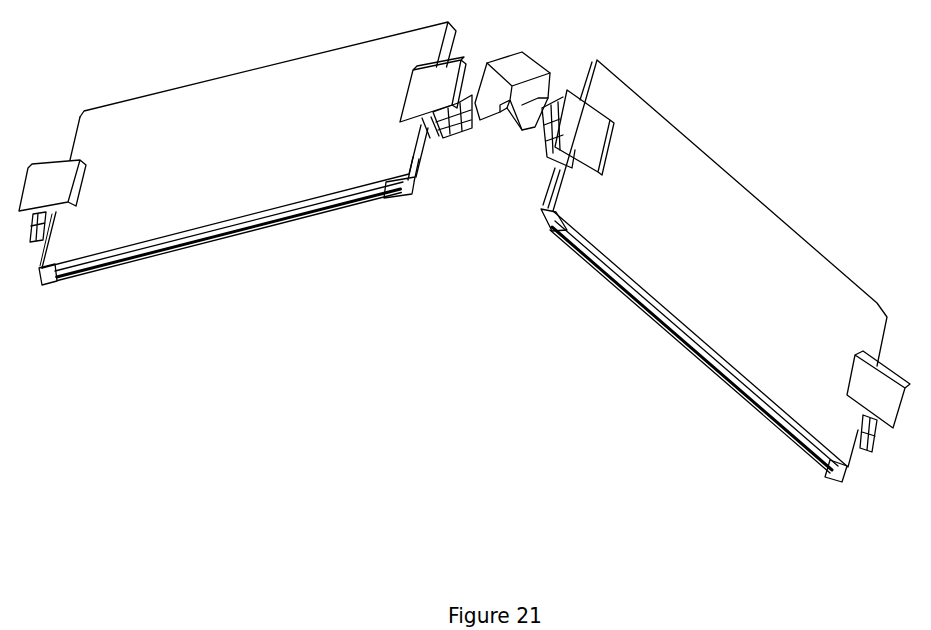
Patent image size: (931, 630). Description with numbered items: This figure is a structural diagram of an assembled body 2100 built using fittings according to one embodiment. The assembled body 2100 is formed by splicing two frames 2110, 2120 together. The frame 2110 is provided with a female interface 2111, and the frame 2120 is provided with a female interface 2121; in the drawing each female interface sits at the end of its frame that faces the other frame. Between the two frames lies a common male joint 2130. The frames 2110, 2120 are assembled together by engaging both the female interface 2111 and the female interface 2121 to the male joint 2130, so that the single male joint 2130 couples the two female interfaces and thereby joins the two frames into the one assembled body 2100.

The assembled body 2100 is at (610, 353).
The frame 2110 is at (279, 216).
The female interface 2111 is at (452, 125).
The frame 2120 is at (645, 300).
The female interface 2121 is at (558, 152).
The male joint 2130 is at (507, 107).